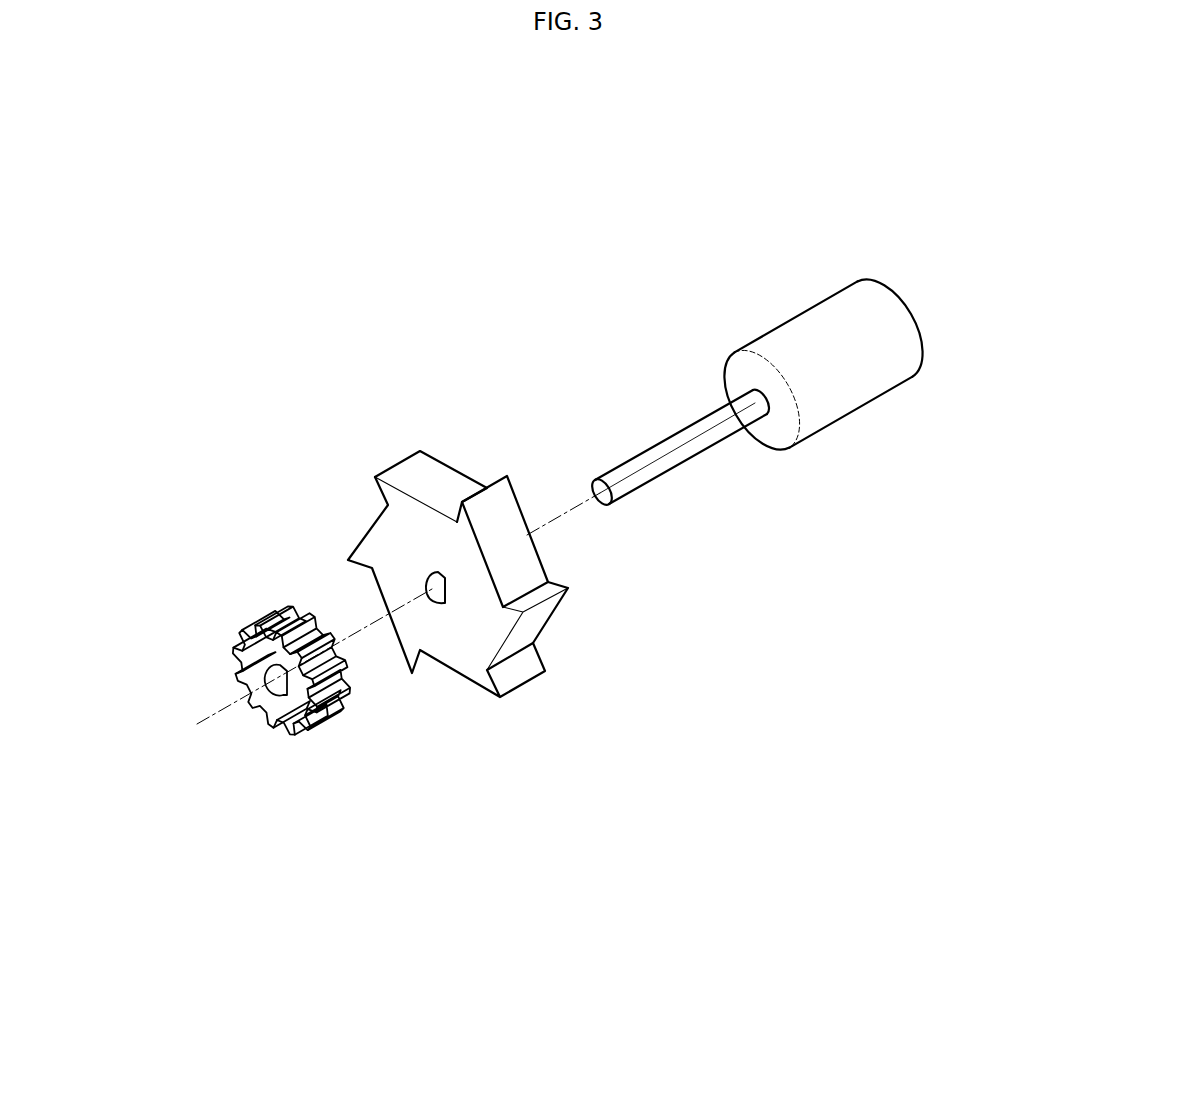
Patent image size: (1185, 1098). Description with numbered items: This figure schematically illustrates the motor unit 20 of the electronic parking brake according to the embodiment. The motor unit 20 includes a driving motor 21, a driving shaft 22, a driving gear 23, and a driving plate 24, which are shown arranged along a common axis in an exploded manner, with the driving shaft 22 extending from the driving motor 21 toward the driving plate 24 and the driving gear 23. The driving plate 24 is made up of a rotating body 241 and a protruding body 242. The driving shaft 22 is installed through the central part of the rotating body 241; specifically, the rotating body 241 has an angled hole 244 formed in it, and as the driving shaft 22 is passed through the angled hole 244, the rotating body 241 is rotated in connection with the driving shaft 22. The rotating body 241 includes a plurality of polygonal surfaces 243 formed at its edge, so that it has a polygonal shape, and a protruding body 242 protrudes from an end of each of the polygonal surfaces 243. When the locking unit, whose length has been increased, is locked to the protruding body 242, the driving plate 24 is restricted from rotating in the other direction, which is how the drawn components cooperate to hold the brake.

The motor unit 20 is at (870, 102).
The driving motor 21 is at (844, 398).
The driving shaft 22 is at (683, 460).
The driving gear 23 is at (278, 707).
The driving plate 24 is at (455, 832).
The rotating body 241 is at (450, 620).
The protruding body 242 is at (548, 617).
The polygonal surfaces 243 is at (443, 474).
The angled hole 244 is at (417, 583).